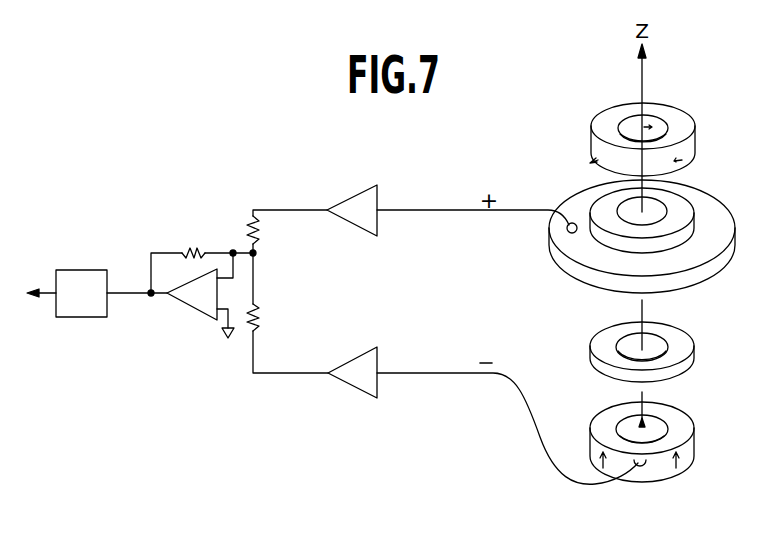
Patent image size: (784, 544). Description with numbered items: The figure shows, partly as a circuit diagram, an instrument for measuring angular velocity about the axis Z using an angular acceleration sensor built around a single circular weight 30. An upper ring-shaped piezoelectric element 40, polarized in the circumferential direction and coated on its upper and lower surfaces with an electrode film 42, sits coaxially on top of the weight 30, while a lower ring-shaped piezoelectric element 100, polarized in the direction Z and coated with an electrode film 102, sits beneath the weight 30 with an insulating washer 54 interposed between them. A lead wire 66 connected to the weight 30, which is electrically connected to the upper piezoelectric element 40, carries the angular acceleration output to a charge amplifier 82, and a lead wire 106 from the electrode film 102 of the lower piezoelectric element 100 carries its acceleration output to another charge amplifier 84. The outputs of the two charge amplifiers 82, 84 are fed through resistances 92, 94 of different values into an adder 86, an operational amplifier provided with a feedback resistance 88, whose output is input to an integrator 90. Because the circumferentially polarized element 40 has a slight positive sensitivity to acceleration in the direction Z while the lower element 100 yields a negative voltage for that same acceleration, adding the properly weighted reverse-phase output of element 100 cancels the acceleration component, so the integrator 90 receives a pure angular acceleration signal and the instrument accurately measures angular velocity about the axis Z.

The circular weight 30 is at (562, 243).
The upper piezoelectric element 40 is at (592, 153).
The electrode film 42 is at (599, 122).
The insulating washer 54 is at (598, 338).
The lead wire 66 is at (548, 211).
The charge amplifier 82 is at (356, 193).
The charge amplifier 84 is at (371, 346).
The adder 86 is at (182, 305).
The feedback resistance 88 is at (201, 246).
The integrator 90 is at (90, 270).
The resistance 92 is at (266, 230).
The resistance 94 is at (266, 312).
The lower piezoelectric element 100 is at (588, 447).
The electrode film 102 is at (682, 422).
The lead wire 106 is at (508, 380).